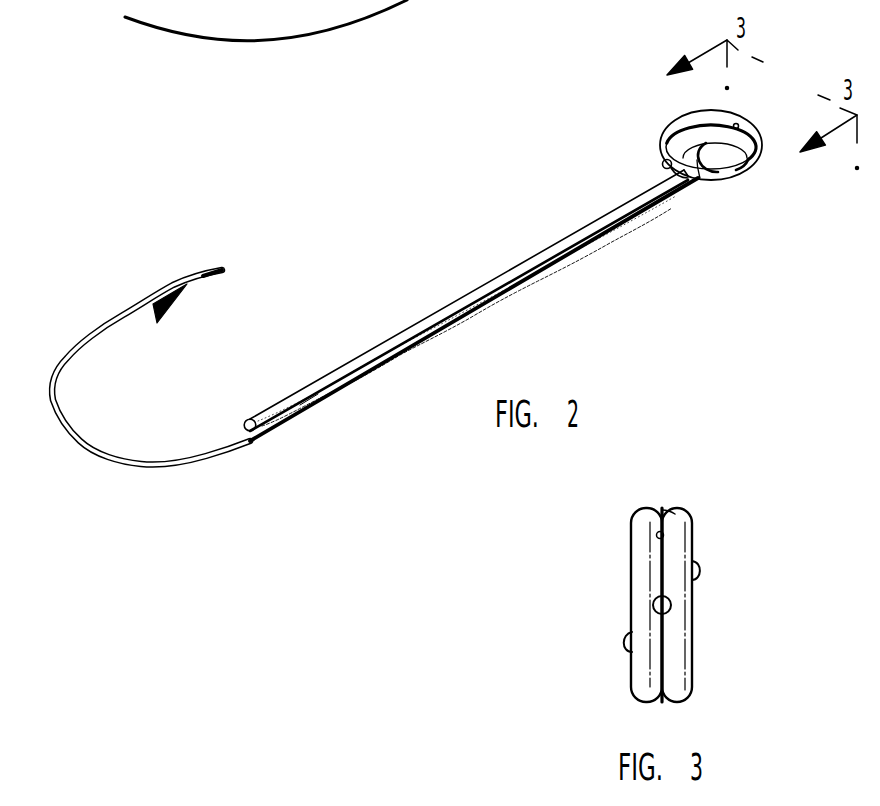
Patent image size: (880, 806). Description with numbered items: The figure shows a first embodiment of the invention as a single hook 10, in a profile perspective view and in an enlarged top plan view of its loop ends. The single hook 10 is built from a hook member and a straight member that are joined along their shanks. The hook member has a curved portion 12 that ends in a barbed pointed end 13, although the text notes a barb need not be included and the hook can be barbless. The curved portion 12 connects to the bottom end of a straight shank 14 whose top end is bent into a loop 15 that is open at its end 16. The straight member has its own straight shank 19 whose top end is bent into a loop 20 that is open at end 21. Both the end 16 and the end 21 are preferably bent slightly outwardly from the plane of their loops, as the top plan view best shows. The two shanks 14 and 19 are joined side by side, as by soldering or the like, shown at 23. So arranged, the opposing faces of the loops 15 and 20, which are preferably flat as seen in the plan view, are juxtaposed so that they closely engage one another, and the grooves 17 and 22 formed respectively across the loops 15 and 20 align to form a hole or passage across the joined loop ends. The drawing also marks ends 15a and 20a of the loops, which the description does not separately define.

In FIG. 2, the single hook 10 is at (557, 319).
In FIG. 3, the single hook 10 is at (718, 591).
In FIG. 2, the curved portion 12 is at (110, 456).
In FIG. 2, the barbed pointed end 13 is at (172, 290).
In FIG. 2, the straight shank 14 is at (403, 350).
In FIG. 2, the loop 15 is at (752, 168).
In FIG. 3, the loop 15 is at (683, 670).
In FIG. 3, the ring half end 15a is at (662, 533).
In FIG. 2, the open end of loop 16 is at (662, 164).
In FIG. 3, the open end of loop 16 is at (700, 564).
In FIG. 2, the groove 17 is at (697, 174).
In FIG. 3, the groove 17 is at (672, 609).
In FIG. 2, the straight shank 19 is at (453, 300).
In FIG. 2, the loop 20 is at (733, 118).
In FIG. 3, the loop 20 is at (640, 527).
In FIG. 3, the ring half end 20a is at (674, 510).
In FIG. 2, the open end of loop 21 is at (713, 172).
In FIG. 3, the open end of loop 21 is at (624, 641).
In FIG. 2, the groove 22 is at (738, 125).
In FIG. 3, the groove 22 is at (653, 600).
In FIG. 2, the solder joint 23 is at (306, 403).